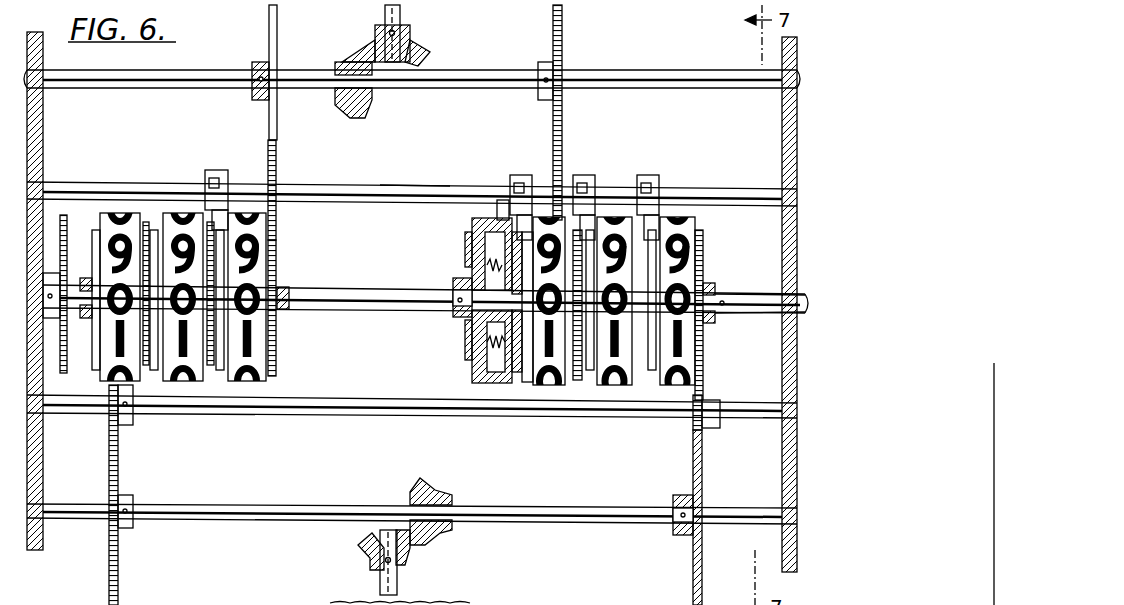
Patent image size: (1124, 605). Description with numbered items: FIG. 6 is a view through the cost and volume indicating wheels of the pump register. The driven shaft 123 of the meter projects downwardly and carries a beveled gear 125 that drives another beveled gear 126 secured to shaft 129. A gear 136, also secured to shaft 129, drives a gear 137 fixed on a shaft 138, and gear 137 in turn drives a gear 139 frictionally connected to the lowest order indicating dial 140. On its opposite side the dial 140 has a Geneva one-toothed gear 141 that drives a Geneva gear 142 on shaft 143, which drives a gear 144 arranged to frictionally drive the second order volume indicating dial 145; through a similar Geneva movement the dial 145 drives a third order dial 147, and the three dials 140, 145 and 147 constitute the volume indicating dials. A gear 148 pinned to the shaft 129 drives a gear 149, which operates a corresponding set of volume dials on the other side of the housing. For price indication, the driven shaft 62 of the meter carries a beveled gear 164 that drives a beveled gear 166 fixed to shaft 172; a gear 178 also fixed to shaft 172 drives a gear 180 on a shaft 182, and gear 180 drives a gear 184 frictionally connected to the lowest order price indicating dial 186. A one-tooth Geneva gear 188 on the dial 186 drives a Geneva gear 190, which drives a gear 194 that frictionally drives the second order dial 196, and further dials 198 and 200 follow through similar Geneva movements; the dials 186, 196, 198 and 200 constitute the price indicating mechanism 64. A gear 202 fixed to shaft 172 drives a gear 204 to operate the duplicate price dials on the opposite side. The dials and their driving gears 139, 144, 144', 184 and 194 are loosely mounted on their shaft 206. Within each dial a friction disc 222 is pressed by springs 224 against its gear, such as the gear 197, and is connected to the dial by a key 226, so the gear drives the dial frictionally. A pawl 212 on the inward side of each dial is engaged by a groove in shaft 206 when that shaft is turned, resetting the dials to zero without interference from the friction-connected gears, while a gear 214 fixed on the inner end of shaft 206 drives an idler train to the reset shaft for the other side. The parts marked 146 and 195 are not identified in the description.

The shaft 129 is at (176, 78).
The gear 136 is at (268, 107).
The gear 137 is at (268, 152).
The gear 139 is at (290, 275).
The Geneva gear 142 is at (205, 168).
The gear 214 is at (70, 202).
The shaft 138 is at (357, 188).
The shaft 143 is at (410, 200).
The friction disc 222 is at (497, 196).
The plate 146 is at (553, 125).
The gear 149 is at (553, 172).
The second order dial 196 is at (600, 215).
The gear 194 is at (622, 215).
The Geneva gear 190 is at (645, 180).
The lowest order price indicating dial 186 is at (697, 200).
The driven shaft 123 is at (400, 20).
The beveled gear 125 is at (413, 58).
The beveled gear 126 is at (365, 118).
The pawl 212 is at (487, 256).
The shaft 206 is at (375, 303).
The key 226 is at (470, 326).
The dial 200 is at (485, 375).
The springs 224 is at (480, 345).
The gear 197 is at (512, 372).
The gear 184 is at (705, 273).
The gear 180 is at (705, 392).
The third order dial 147 is at (148, 368).
The second order volume indicating dial 145 is at (190, 383).
The gear 144' is at (164, 348).
The gear 144 is at (228, 345).
The lowest order indicating dial 140 is at (258, 382).
The Geneva one-toothed gear 141 is at (236, 368).
The gear 204 is at (119, 478).
The gear 202 is at (119, 593).
The shaft 172 is at (205, 527).
The beveled gear 166 is at (425, 492).
The price indicating mechanism 64 is at (522, 385).
The dial 198 is at (553, 390).
The gear 195 is at (577, 385).
The one-tooth Geneva gear 188 is at (640, 385).
The shaft 182 is at (748, 418).
The beveled gear 164 is at (360, 548).
The shaft 62 is at (398, 578).
The gear 148 is at (474, 602).
The gear 178 is at (693, 591).